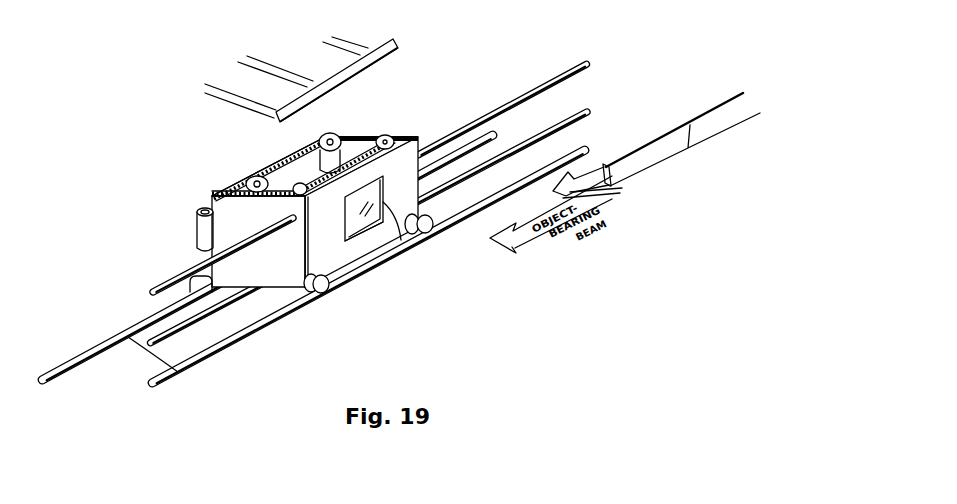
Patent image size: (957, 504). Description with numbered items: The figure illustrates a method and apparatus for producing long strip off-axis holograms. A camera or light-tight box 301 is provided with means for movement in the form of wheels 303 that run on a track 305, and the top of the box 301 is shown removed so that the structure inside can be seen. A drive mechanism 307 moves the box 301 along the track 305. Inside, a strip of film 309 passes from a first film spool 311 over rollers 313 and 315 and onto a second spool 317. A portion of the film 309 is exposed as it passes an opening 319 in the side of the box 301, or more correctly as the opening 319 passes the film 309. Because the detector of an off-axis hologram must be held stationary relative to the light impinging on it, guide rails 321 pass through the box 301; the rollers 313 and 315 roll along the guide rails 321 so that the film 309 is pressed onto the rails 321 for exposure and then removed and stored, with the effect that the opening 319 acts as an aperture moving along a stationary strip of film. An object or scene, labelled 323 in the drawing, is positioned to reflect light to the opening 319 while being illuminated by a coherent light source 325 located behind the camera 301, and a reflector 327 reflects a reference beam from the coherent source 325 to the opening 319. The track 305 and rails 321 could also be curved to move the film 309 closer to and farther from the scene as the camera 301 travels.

The light-tight box 301 is at (342, 178).
The wheels 303 is at (190, 273).
The track 305 is at (150, 386).
The drive mechanism 307 is at (198, 232).
The strip of film 309 is at (346, 236).
The first film spool 311 is at (318, 140).
The roller 313 is at (406, 132).
The roller 315 is at (313, 197).
The second spool 317 is at (258, 175).
The opening 319 is at (381, 177).
The guide rails 321 is at (154, 292).
The object or scene 323 is at (590, 291).
The coherent light source 325 is at (326, 74).
The reflector 327 is at (677, 147).